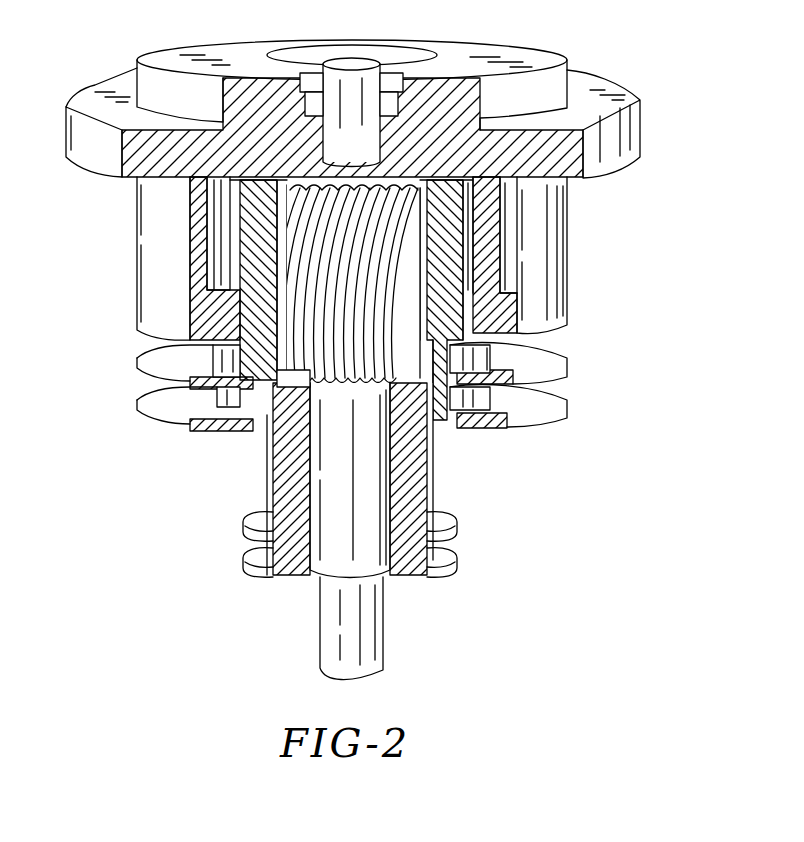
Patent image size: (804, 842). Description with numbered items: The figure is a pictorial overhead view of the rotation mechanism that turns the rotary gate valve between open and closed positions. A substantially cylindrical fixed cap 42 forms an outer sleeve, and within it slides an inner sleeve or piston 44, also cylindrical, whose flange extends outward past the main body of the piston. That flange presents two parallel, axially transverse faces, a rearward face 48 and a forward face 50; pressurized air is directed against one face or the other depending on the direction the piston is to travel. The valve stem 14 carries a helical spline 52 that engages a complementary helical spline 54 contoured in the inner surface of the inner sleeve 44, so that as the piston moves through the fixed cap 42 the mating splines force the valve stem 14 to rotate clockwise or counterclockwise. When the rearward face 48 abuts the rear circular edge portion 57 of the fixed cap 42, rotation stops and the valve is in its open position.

The valve stem 14 is at (367, 635).
The fixed cap 42 is at (553, 227).
The inner sleeve or piston 44 is at (437, 413).
The rearward face 48 is at (540, 355).
The forward face 50 is at (450, 445).
The helical spline 52 is at (387, 293).
The helical spline 54 is at (290, 213).
The rear circular edge portion 57 is at (150, 333).